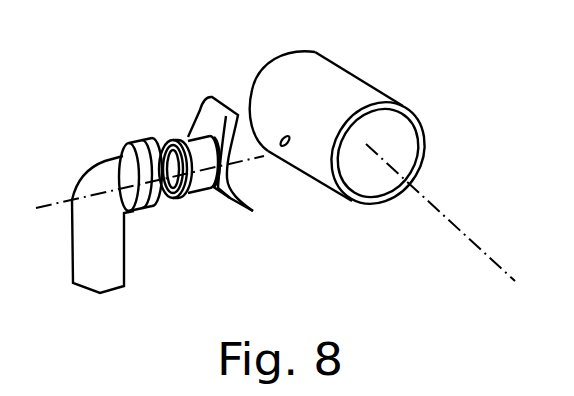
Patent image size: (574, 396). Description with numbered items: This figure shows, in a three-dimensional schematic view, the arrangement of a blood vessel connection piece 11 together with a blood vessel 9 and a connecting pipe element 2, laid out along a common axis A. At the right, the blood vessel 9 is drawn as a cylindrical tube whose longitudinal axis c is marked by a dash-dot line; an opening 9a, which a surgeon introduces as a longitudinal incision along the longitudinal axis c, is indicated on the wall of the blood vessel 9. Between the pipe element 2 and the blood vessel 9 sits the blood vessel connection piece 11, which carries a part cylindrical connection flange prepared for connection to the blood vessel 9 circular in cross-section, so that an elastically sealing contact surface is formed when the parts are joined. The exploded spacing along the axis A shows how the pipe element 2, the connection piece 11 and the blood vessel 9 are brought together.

The pipe elbow 2 is at (93, 178).
The blood vessel connection piece 11 is at (193, 140).
The blood vessel 9 is at (366, 82).
The opening 9a is at (290, 136).
The pipe axis A is at (36, 209).
The longitudinal axis c is at (492, 270).